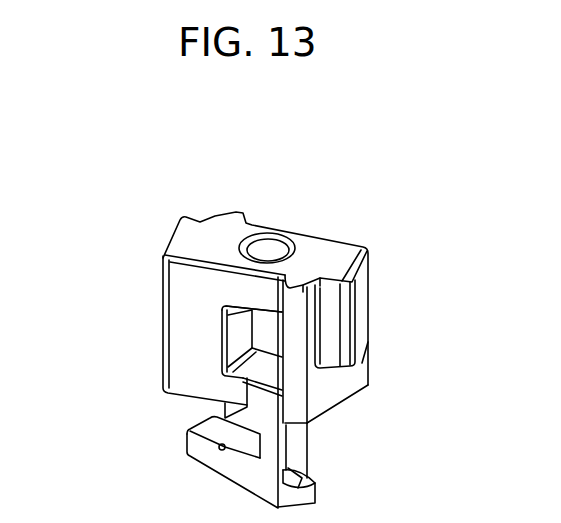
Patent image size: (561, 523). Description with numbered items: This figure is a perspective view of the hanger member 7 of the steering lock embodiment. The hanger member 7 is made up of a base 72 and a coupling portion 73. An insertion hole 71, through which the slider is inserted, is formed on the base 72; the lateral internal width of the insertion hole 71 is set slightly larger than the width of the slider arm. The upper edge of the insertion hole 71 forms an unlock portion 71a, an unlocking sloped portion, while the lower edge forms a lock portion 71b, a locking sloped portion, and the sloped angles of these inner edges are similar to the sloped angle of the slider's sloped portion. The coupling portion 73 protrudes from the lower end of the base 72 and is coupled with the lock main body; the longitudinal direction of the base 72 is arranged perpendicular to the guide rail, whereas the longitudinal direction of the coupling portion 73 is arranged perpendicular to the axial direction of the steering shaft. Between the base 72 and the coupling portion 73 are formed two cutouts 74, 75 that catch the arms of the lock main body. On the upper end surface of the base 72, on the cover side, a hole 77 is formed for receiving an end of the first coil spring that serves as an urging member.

The hanger member 7 is at (292, 330).
The insertion hole 71 is at (233, 332).
The unlock portion 71a is at (265, 313).
The lock portion 71b is at (232, 351).
The base 72 is at (357, 382).
The coupling portion 73 is at (373, 489).
The cutout 74 is at (300, 445).
The cutout 75 is at (207, 427).
The hole 77 is at (263, 253).